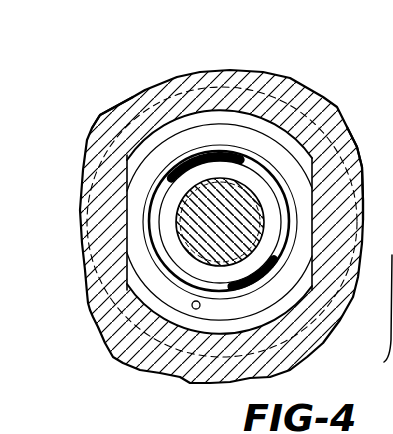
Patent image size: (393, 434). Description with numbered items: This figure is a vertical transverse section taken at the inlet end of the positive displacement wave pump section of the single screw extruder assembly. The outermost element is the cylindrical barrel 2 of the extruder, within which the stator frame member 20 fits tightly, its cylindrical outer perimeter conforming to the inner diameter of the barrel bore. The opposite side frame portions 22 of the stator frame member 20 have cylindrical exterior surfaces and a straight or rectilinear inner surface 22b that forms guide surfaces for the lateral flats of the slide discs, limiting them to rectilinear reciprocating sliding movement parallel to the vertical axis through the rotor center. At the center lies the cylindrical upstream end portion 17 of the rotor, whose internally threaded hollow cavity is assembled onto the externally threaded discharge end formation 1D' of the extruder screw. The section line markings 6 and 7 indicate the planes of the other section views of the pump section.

The housing body 2 is at (263, 80).
The recess / bore 20 is at (126, 268).
The bearing ring 17 is at (240, 179).
The shaft 1D' is at (203, 210).
The wall 22 is at (117, 183).
The notch 22b is at (328, 183).
The section line 6- 6 is at (221, 97).
The section line 7- 7 is at (132, 223).